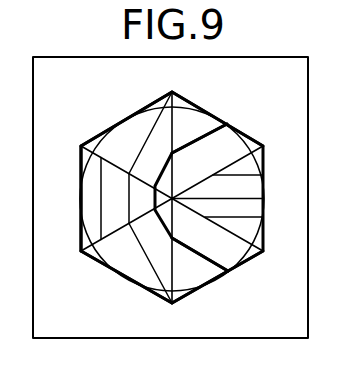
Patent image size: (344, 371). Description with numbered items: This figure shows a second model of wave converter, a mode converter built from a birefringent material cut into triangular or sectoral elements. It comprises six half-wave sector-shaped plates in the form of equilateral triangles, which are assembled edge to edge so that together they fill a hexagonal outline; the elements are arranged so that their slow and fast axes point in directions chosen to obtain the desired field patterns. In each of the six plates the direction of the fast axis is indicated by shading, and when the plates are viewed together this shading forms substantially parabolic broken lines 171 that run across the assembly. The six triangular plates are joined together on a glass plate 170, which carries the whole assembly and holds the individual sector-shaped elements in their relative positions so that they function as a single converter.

The glass plate 170 is at (57, 63).
The parabolic broken lines 171 is at (181, 149).